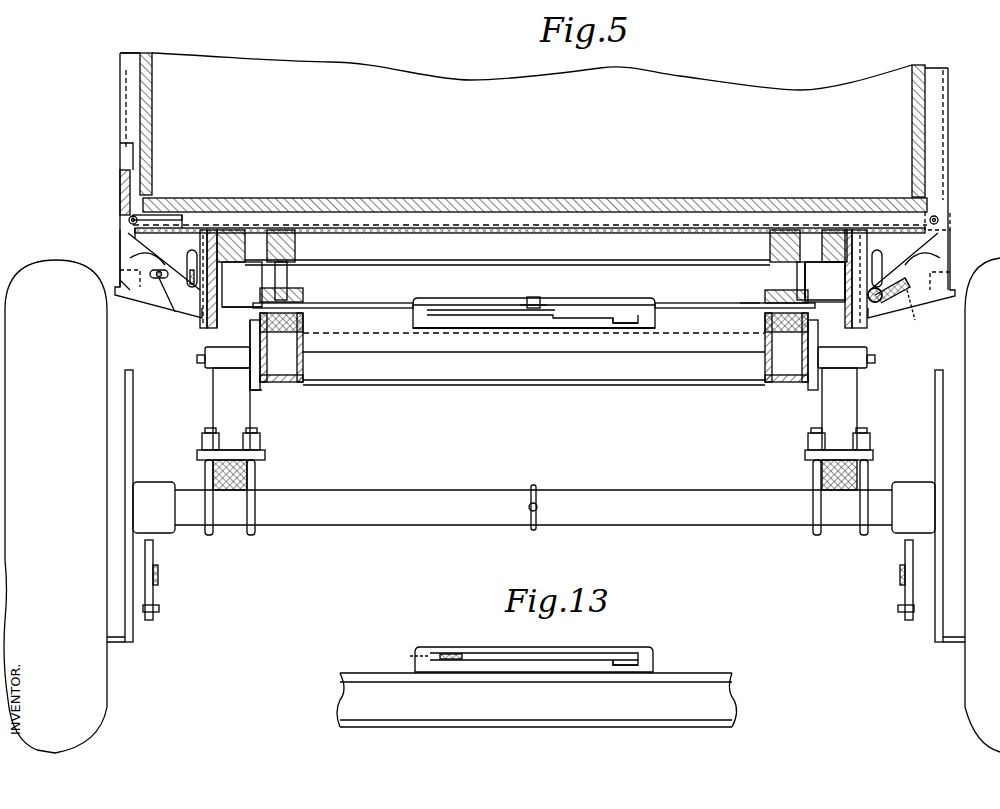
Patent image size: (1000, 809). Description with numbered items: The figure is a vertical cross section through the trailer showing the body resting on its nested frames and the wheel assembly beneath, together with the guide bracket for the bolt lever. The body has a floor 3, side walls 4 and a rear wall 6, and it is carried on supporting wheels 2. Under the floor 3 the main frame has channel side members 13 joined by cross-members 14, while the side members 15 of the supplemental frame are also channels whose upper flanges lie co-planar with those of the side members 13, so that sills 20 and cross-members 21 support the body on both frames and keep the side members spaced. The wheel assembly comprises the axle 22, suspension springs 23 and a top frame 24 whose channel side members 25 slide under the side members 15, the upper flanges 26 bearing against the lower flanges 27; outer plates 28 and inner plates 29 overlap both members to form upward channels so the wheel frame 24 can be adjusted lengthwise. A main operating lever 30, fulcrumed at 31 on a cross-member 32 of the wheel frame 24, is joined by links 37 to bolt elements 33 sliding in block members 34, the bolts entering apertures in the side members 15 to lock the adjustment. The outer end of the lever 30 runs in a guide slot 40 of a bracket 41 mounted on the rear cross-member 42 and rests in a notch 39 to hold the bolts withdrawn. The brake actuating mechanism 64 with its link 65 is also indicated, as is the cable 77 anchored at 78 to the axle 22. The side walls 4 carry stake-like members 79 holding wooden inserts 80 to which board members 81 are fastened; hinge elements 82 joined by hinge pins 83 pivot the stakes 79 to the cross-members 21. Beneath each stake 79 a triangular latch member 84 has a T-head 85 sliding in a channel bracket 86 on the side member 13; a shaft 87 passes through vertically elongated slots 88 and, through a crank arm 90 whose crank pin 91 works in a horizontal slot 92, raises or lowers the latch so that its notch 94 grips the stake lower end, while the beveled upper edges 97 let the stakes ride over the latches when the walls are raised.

In FIG. 5, the supporting wheels 2 is at (108, 705).
In FIG. 5, the bottom wall or floor 3 is at (568, 196).
In FIG. 5, the side walls 4 is at (152, 118).
In FIG. 5, the rear wall 6 is at (374, 76).
In FIG. 5, the side members of main frame 13 is at (212, 338).
In FIG. 5, the cross-members of main frame 14 is at (436, 265).
In FIG. 5, the side members of supplemental frame 15 is at (287, 270).
In FIG. 5, the sills 20 is at (278, 230).
In FIG. 5, the cross-members 21 is at (484, 226).
In FIG. 5, the axle 22 is at (640, 488).
In FIG. 5, the suspension springs 23 is at (222, 408).
In FIG. 5, the top frame of wheel assembly 24 is at (500, 386).
In FIG. 5, the side members of wheel frame 25 is at (290, 370).
In FIG. 5, the upper flanges 26 is at (303, 340).
In FIG. 5, the lower flanges 27 is at (305, 322).
In FIG. 5, the outer plates 28 is at (248, 305).
In FIG. 5, the inner plates 29 is at (300, 385).
In FIG. 5, the main operating lever 30 is at (485, 318).
In FIG. 13, the main operating lever 30 is at (458, 652).
In FIG. 5, the fulcrum 31 is at (532, 296).
In FIG. 5, the cross-member 32 is at (420, 345).
In FIG. 5, the bolt elements 33 is at (310, 303).
In FIG. 5, the block members 34 is at (285, 290).
In FIG. 5, the links 37 is at (382, 305).
In FIG. 5, the notch 39 is at (630, 316).
In FIG. 13, the notch 39 is at (630, 658).
In FIG. 5, the guide slot 40 is at (565, 318).
In FIG. 13, the guide slot 40 is at (598, 653).
In FIG. 5, the bracket 41 is at (592, 298).
In FIG. 13, the bracket 41 is at (655, 656).
In FIG. 5, the cross-member 42 is at (585, 386).
In FIG. 13, the cross-member 42 is at (725, 705).
In FIG. 5, the brake actuating mechanism 64 is at (165, 608).
In FIG. 5, the link 65 is at (160, 580).
In FIG. 5, the cable 77 is at (528, 507).
In FIG. 5, the cable anchorage 78 is at (534, 485).
In FIG. 5, the stake-like members 79 is at (122, 100).
In FIG. 5, the wooden inserts 80 is at (128, 155).
In FIG. 5, the board members 81 is at (138, 70).
In FIG. 5, the hinge elements 82 is at (168, 214).
In FIG. 5, the hinge pins 83 is at (130, 220).
In FIG. 5, the latch member 84 is at (162, 300).
In FIG. 5, the T-head 85 is at (207, 228).
In FIG. 5, the channel bracket 86 is at (210, 326).
In FIG. 5, the shaft 87 is at (195, 300).
In FIG. 5, the vertically elongated slots 88 is at (187, 268).
In FIG. 5, the crank arm 90 is at (885, 302).
In FIG. 5, the crank pin 91 is at (166, 282).
In FIG. 5, the horizontal slot 92 is at (155, 280).
In FIG. 5, the notch 94 is at (120, 280).
In FIG. 5, the upper edges 97 is at (130, 258).